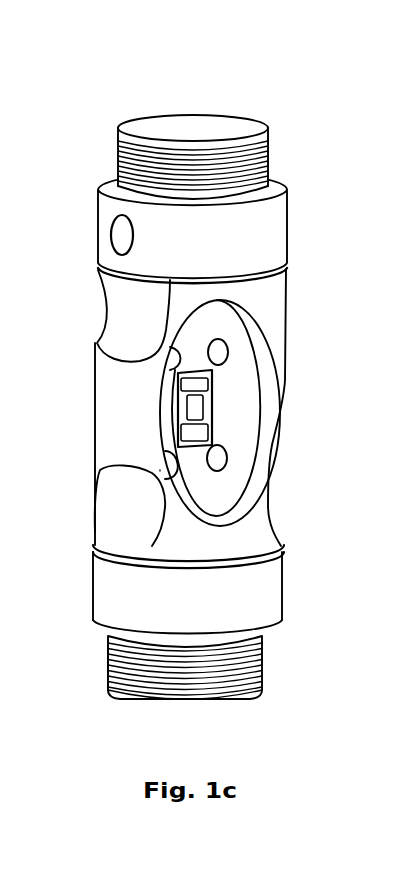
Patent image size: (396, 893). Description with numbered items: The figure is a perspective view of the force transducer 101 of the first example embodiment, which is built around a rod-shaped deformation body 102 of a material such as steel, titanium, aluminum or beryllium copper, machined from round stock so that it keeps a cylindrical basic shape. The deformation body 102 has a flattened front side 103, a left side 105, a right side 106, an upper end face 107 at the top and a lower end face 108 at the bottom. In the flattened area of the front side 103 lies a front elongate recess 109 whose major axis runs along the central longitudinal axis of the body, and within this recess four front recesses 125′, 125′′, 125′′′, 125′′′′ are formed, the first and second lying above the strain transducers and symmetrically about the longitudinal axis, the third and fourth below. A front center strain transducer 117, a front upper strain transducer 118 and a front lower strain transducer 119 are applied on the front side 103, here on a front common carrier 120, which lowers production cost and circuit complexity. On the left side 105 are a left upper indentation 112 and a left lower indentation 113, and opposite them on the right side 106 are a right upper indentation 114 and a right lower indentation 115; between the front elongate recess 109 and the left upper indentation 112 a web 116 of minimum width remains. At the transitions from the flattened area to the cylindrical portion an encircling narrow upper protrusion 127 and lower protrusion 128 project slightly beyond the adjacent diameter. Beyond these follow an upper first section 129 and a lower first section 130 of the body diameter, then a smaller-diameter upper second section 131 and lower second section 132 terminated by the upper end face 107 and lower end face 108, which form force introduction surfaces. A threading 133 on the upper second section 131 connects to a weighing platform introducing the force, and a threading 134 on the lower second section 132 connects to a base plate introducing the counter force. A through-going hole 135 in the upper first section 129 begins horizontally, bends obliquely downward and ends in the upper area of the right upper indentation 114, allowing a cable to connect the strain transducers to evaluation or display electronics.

The force transducer 101 is at (324, 105).
The deformation body 102 is at (246, 538).
The front side 103 is at (240, 575).
The left side 105 is at (122, 434).
The right side 106 is at (274, 446).
The upper end face 107 is at (175, 125).
The lower end face 108 is at (147, 697).
The front elongate recess 109 is at (226, 438).
The left upper indentation 112 is at (128, 330).
The left lower indentation 113 is at (122, 517).
The right upper indentation 114 is at (276, 315).
The right lower indentation 115 is at (271, 488).
The web 116 is at (173, 338).
The front center strain transducer 117 is at (198, 406).
The front upper strain transducer 118 is at (197, 384).
The front lower strain transducer 119 is at (200, 433).
The front common carrier 120 is at (178, 408).
The first front recess 125′ is at (177, 360).
The second front recess 125′′ is at (222, 350).
The third front recess 125′′′ is at (173, 463).
The fourth front recess 125′′′′ is at (228, 460).
The upper protrusion 127 is at (278, 277).
The lower protrusion 128 is at (280, 548).
The upper first section 129 is at (272, 245).
The lower first section 130 is at (262, 613).
The upper second section 131 is at (256, 189).
The lower second section 132 is at (243, 640).
The threading 133 is at (268, 162).
The threading 134 is at (117, 668).
The through-going hole 135 is at (120, 234).